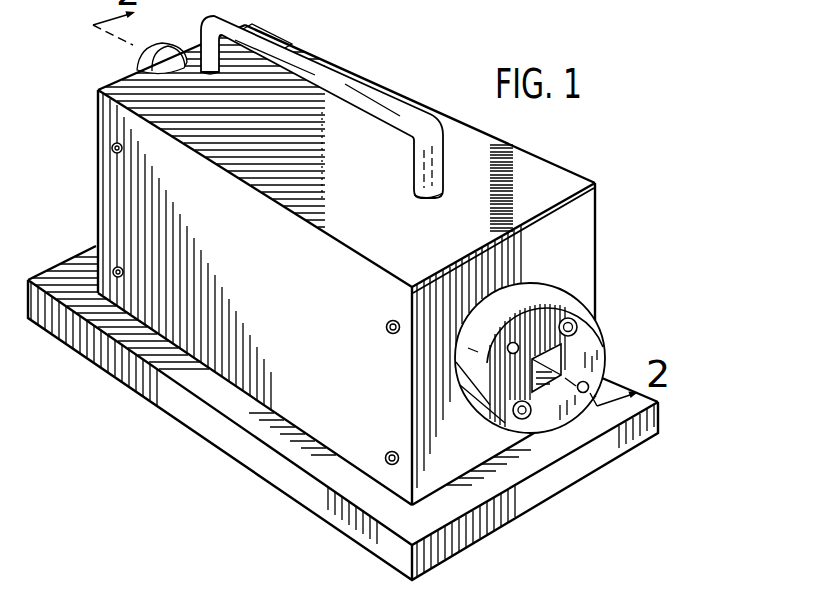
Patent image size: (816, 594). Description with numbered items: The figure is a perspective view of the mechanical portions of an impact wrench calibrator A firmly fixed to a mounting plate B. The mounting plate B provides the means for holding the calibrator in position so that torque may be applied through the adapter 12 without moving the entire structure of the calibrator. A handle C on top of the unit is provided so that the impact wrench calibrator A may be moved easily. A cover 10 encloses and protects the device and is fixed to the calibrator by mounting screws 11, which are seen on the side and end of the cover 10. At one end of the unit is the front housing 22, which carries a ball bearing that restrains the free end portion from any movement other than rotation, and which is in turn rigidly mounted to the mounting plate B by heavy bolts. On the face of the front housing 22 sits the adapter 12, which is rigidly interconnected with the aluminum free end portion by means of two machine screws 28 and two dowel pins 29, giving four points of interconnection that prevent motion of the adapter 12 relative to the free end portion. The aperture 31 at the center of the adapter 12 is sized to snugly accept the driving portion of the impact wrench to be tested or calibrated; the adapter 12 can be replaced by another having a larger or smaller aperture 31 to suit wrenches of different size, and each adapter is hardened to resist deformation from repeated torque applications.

The cover 10 is at (551, 177).
The mounting screws 11 is at (112, 149).
The adapter 12 is at (597, 342).
The front housing 22 is at (584, 231).
The machine screws 28 is at (570, 319).
The dowel pins 29 is at (513, 342).
The aperture 31 is at (562, 350).
The impact wrench calibrator A is at (96, 117).
The mounting plate B is at (203, 424).
The handle C is at (307, 66).